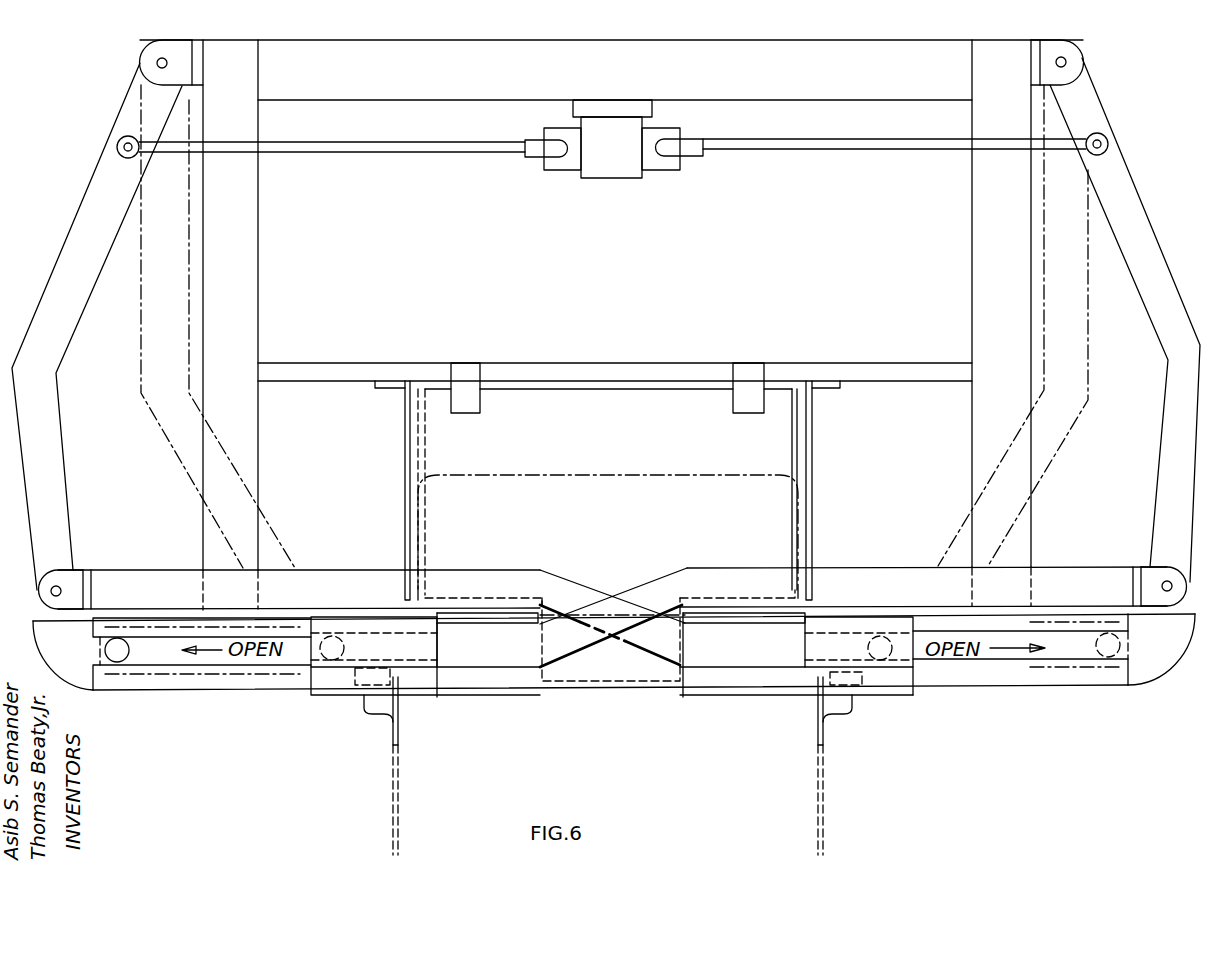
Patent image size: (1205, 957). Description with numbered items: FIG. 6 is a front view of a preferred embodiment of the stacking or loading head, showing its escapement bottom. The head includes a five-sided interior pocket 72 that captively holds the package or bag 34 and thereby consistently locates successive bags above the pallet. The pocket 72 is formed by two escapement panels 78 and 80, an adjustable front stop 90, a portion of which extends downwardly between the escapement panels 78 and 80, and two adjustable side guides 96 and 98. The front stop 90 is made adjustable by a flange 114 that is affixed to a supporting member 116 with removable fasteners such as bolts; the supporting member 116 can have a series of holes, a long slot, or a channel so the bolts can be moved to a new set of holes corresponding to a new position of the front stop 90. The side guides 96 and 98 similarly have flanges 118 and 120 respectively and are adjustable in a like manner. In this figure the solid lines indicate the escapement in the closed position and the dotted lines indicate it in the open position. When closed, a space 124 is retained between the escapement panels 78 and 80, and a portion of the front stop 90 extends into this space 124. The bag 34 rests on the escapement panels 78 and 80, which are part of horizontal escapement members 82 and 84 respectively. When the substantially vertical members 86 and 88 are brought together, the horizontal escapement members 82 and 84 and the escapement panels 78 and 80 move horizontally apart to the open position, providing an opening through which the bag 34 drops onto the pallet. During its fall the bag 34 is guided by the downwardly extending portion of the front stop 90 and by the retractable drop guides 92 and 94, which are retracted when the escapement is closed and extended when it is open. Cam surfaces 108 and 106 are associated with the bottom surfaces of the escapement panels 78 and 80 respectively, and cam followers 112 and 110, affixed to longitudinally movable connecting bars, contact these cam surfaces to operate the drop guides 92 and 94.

The package or bag 34 is at (608, 537).
The interior pocket 72 is at (635, 407).
The escapement panel 78 is at (448, 620).
The escapement panel 80 is at (771, 620).
The horizontal escapement member 82 is at (518, 652).
The horizontal escapement member 84 is at (716, 648).
The substantially vertical member 86 is at (76, 222).
The substantially vertical member 88 is at (1133, 205).
The adjustable front stop 90 is at (793, 437).
The retractable drop guide 92 is at (826, 736).
The retractable drop guide 94 is at (398, 744).
The adjustable side guide 96 is at (812, 476).
The adjustable side guide 98 is at (405, 476).
The cam surface 106 is at (866, 674).
The cam surface 108 is at (332, 700).
The cam follower 110 is at (905, 688).
The cam follower 112 is at (367, 697).
The flange 114 is at (462, 370).
The supporting member 116 is at (551, 363).
The flange 118 is at (840, 385).
The flange 120 is at (400, 389).
The space 124 is at (625, 617).